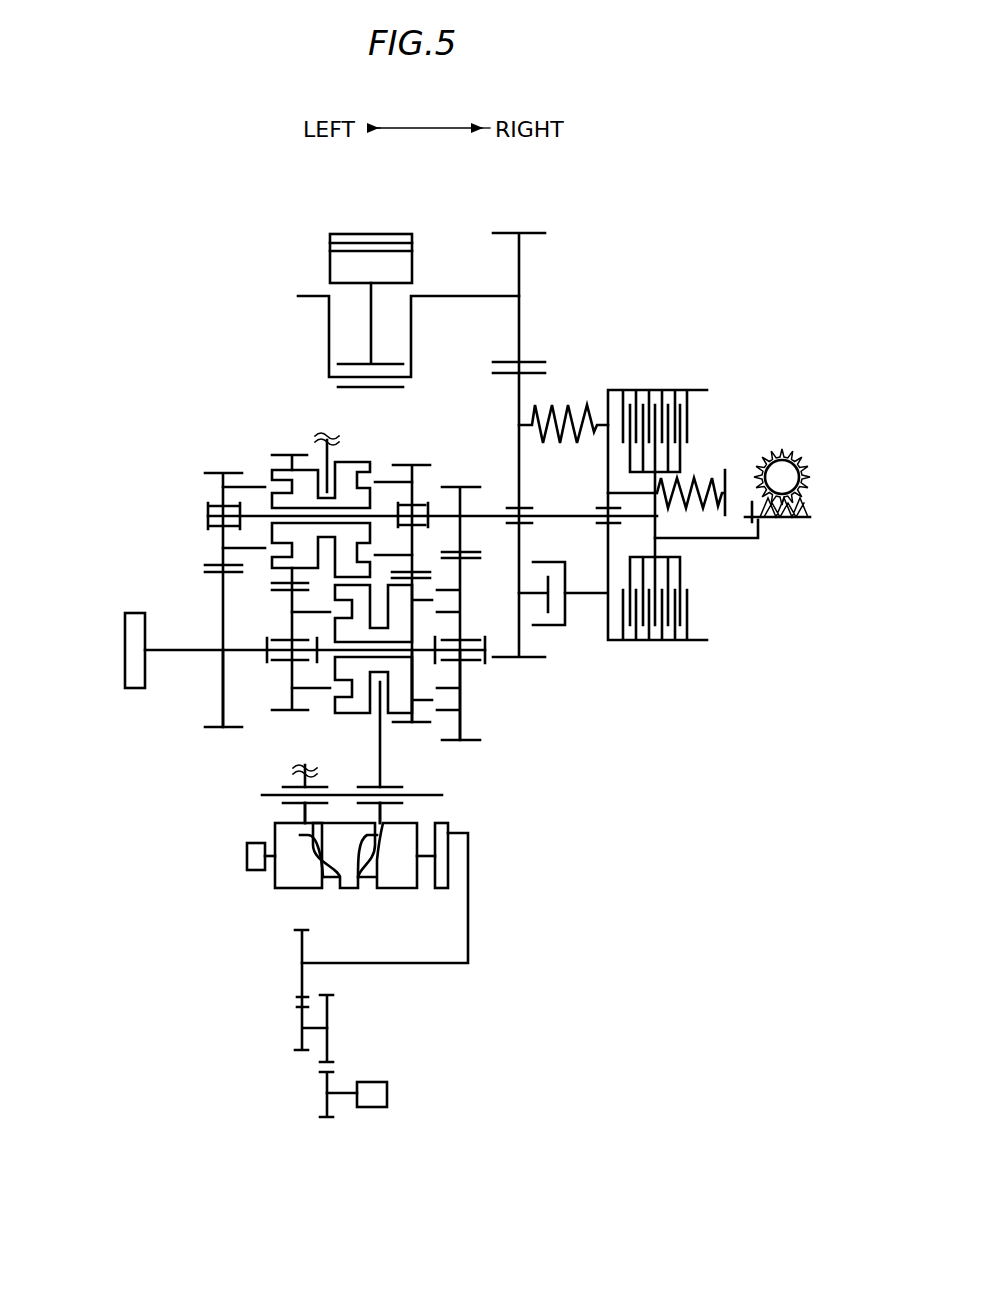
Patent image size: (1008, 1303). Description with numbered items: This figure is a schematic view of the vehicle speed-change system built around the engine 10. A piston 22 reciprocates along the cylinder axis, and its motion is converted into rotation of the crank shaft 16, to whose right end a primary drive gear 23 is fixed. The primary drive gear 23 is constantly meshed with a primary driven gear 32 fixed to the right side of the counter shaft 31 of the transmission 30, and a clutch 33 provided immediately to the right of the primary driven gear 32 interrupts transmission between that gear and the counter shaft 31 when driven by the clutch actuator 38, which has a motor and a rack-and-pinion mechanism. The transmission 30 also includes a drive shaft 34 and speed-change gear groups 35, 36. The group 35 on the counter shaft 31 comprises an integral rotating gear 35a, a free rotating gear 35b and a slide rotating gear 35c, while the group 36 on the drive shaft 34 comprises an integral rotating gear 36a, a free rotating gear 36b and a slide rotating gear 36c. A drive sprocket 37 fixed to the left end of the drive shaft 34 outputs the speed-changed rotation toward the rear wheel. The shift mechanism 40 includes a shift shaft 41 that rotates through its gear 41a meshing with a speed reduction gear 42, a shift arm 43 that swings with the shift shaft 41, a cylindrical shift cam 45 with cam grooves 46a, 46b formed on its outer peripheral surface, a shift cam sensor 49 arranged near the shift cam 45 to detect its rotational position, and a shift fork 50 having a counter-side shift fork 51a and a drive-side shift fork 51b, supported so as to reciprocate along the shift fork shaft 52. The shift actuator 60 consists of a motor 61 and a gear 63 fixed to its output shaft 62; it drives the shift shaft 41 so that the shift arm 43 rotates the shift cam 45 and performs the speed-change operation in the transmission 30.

The engine 10 is at (150, 295).
The crank shaft 16 is at (315, 296).
The piston 22 is at (330, 250).
The primary drive gear 23 is at (519, 233).
The transmission 30 is at (150, 578).
The counter shaft 31 is at (208, 525).
The primary driven gear 32 is at (543, 372).
The clutch 33 is at (718, 412).
The drive shaft 34 is at (165, 647).
The speed-change gear group 35 is at (163, 495).
The integral rotating gear 35a is at (460, 487).
The free rotating gear 35b is at (223, 472).
The slide rotating gear 35c is at (292, 455).
The speed-change gear group 36 is at (172, 695).
The integral rotating gear 36a is at (213, 730).
The free rotating gear 36b is at (292, 720).
The slide rotating gear 36c is at (418, 722).
The drive sprocket 37 is at (125, 643).
The clutch actuator 38 is at (803, 453).
The shift mechanism 40 is at (570, 760).
The shift shaft 41 is at (424, 963).
The gear 41a is at (300, 945).
The speed reduction gear 42 is at (302, 1023).
The shift arm 43 is at (470, 866).
The shift cam 45 is at (295, 888).
The cam groove 46a is at (327, 888).
The cam groove 46b is at (365, 888).
The shift cam sensor 49 is at (247, 858).
The shift fork 50 is at (342, 813).
The counter-side shift fork 51a is at (322, 433).
The drive-side shift fork 51b is at (385, 778).
The shift fork shaft 52 is at (442, 800).
The shift actuator 60 is at (422, 1093).
The motor 61 is at (373, 1107).
The output shaft 62 is at (343, 1095).
The gear 63 is at (325, 1085).